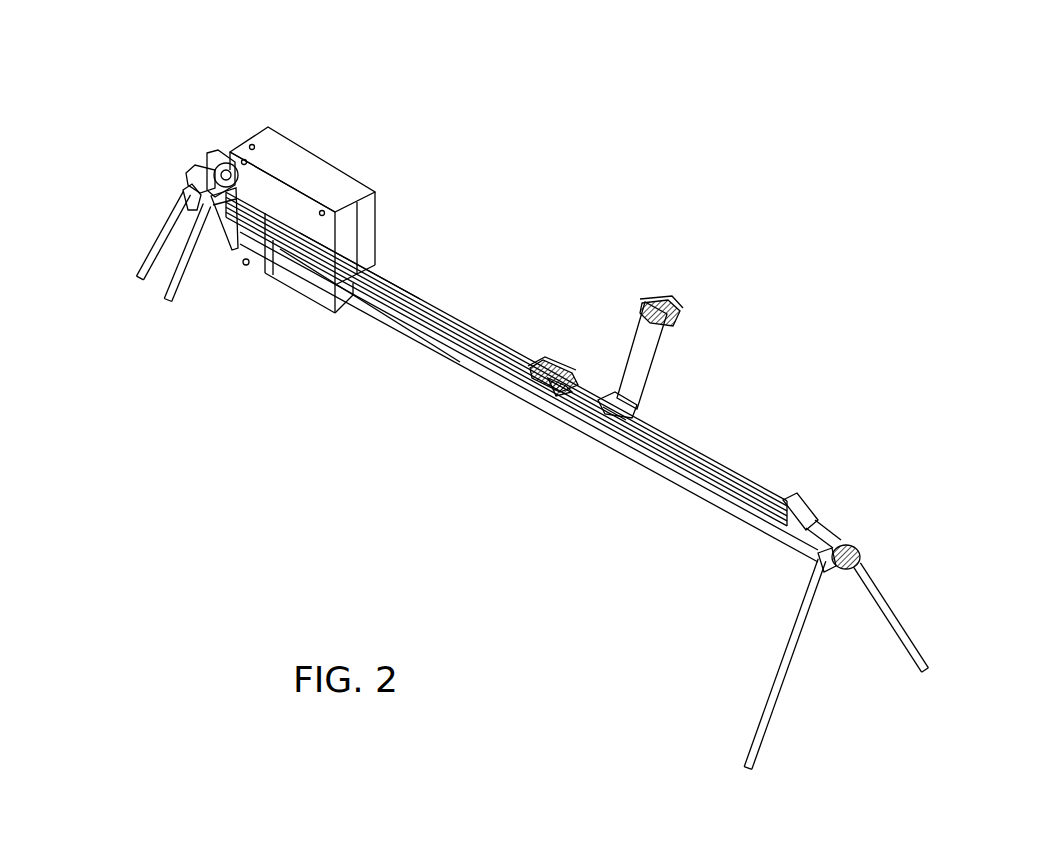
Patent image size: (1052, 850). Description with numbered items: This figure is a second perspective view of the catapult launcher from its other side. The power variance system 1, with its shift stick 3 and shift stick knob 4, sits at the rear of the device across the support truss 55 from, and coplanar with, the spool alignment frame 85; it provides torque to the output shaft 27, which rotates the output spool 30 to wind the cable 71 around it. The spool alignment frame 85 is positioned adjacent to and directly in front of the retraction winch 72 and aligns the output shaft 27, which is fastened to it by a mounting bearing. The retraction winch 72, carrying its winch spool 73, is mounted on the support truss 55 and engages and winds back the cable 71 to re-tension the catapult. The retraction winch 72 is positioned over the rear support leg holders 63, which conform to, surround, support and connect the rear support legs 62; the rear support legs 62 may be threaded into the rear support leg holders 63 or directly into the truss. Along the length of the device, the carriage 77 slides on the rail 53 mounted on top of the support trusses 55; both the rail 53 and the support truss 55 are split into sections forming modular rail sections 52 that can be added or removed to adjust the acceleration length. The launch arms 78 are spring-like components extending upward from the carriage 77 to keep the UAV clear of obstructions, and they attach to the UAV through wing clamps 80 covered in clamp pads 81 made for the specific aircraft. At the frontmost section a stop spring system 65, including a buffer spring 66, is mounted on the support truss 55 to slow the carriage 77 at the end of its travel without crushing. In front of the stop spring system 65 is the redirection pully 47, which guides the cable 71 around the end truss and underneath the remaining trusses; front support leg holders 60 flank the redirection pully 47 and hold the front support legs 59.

The power variance system 1 is at (323, 182).
The shift stick 3 is at (214, 80).
The shift stick knob 4 is at (273, 108).
The winch spool 73 is at (193, 139).
The retraction winch 72 is at (141, 147).
The rear support leg holder 63 is at (137, 187).
The rear support leg 62 is at (118, 250).
The spool alignment frame 85 is at (170, 276).
The output shaft 27 is at (218, 312).
The output spool 30 is at (243, 321).
The support truss 55 is at (529, 387).
The modular rail section 52 is at (506, 359).
The rail 53 is at (402, 246).
The cable 71 is at (370, 338).
The wing clamps 80 is at (589, 340).
The clamp pad 81 is at (630, 378).
The carriage 77 is at (703, 361).
The launch arms 78 is at (599, 359).
The buffer spring 66 is at (823, 476).
The stop spring system 65 is at (851, 501).
The redirection pully 47 is at (888, 542).
The front support leg holder 60 is at (756, 581).
The front support leg 59 is at (836, 670).